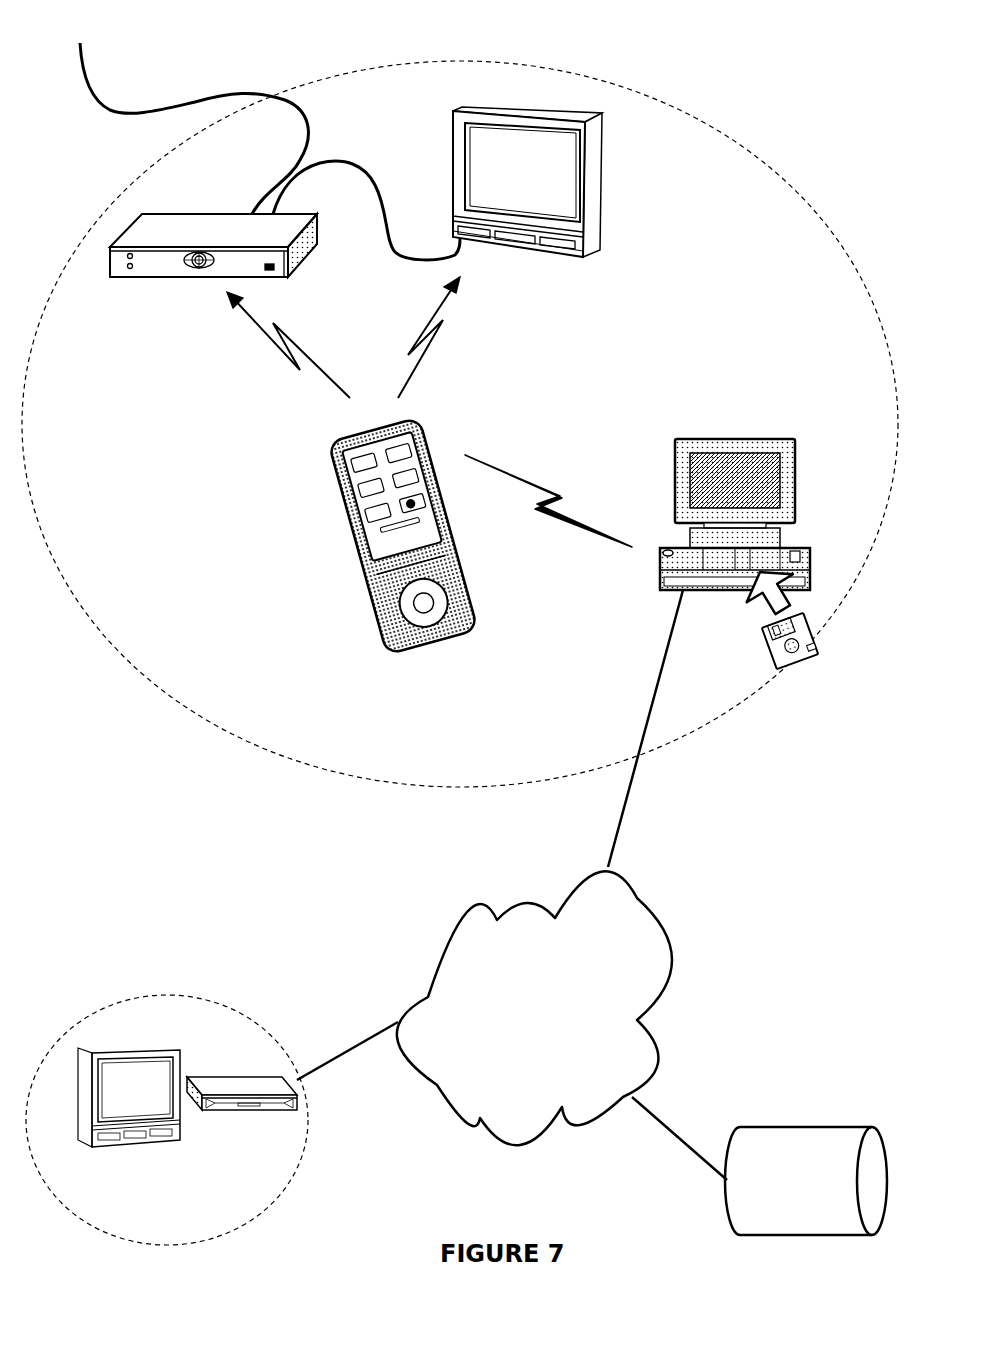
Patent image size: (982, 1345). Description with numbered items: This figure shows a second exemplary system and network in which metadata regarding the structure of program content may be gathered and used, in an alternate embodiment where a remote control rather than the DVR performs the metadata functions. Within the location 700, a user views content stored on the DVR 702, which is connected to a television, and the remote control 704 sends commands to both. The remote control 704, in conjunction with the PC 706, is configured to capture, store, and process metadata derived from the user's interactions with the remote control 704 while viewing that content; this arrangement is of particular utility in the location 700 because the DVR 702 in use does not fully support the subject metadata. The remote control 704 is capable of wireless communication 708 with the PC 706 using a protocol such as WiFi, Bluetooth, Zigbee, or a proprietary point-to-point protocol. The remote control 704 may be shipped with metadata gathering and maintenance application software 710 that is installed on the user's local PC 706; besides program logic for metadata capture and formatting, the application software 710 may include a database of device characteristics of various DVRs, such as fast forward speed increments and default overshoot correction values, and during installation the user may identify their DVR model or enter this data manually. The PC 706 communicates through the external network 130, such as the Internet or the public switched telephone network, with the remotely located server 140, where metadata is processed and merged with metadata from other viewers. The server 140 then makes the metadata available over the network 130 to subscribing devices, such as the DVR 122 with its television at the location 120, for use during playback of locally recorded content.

The location 700 is at (667, 103).
The DVR 702 is at (152, 278).
The remote control 704 is at (338, 518).
The PC 706 is at (735, 438).
The wireless communication 708 is at (557, 518).
The metadata gathering and maintenance application software 710 is at (810, 660).
The external network 130 is at (653, 910).
The location 120 is at (165, 993).
The DVR 122 is at (238, 1075).
The server 140 is at (798, 1125).